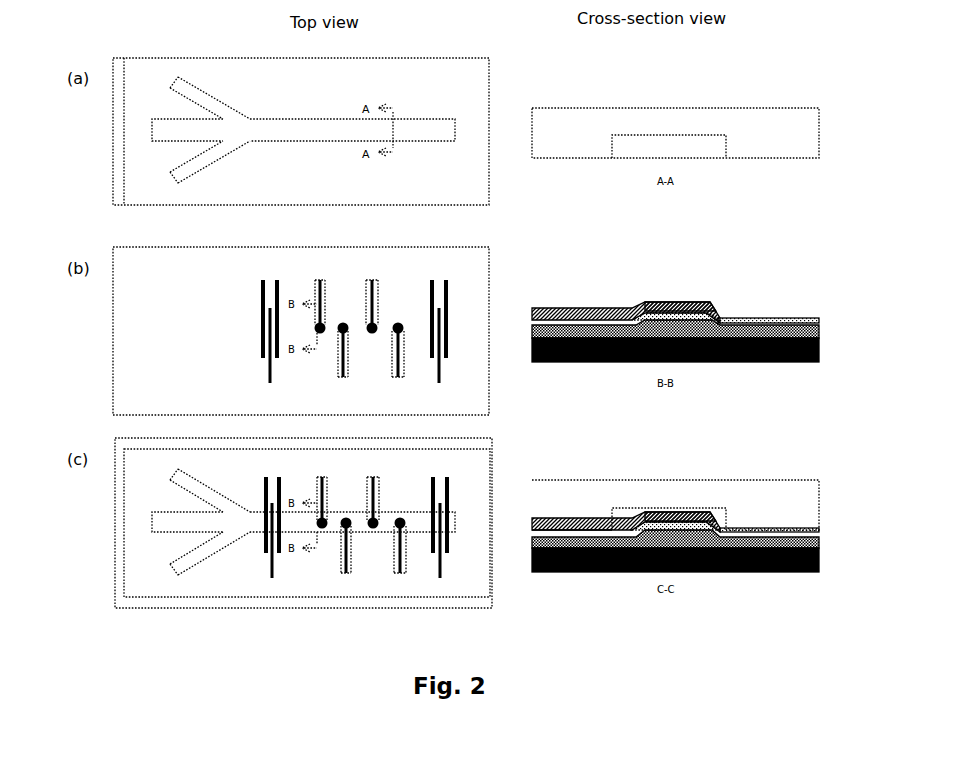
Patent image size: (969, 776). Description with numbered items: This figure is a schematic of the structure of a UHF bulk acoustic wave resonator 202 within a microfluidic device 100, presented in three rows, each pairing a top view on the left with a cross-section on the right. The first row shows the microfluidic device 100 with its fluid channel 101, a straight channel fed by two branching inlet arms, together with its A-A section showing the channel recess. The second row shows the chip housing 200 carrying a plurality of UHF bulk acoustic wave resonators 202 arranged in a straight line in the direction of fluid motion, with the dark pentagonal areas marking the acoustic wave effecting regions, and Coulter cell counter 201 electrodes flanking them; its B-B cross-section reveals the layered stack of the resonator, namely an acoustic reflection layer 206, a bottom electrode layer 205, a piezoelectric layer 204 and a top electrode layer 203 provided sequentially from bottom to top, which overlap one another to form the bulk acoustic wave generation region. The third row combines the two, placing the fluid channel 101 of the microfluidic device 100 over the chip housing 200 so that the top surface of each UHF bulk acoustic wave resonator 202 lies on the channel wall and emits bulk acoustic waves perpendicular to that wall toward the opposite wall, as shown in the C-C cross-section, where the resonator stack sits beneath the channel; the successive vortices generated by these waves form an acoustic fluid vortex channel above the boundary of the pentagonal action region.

The microfluidic device 100 is at (385, 76).
The fluid channel 101 is at (302, 130).
The chip housing 200 is at (192, 275).
The Coulter cell counter 201 is at (262, 330).
The UHF bulk acoustic wave resonator 202 is at (377, 325).
The top electrode layer 203 is at (678, 303).
The piezoelectric layer 204 is at (737, 320).
The bottom electrode layer 205 is at (658, 318).
The acoustic reflection layer 206 is at (582, 320).